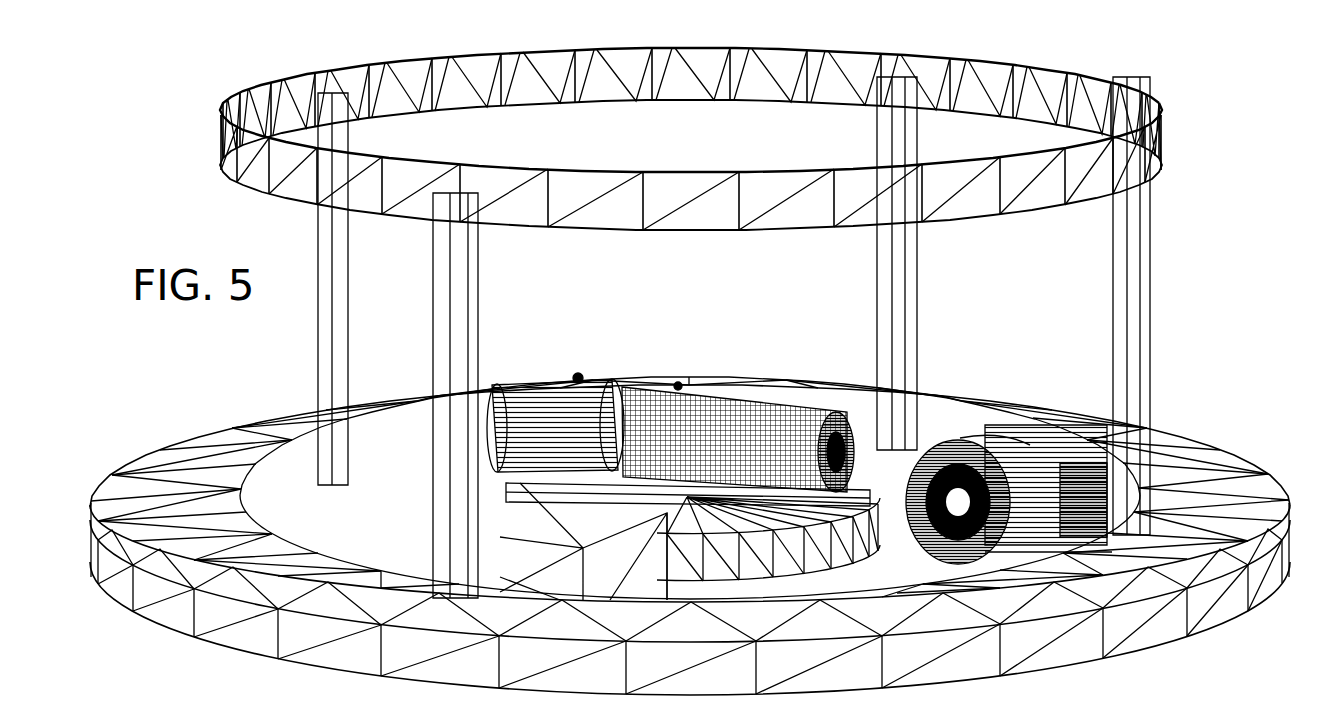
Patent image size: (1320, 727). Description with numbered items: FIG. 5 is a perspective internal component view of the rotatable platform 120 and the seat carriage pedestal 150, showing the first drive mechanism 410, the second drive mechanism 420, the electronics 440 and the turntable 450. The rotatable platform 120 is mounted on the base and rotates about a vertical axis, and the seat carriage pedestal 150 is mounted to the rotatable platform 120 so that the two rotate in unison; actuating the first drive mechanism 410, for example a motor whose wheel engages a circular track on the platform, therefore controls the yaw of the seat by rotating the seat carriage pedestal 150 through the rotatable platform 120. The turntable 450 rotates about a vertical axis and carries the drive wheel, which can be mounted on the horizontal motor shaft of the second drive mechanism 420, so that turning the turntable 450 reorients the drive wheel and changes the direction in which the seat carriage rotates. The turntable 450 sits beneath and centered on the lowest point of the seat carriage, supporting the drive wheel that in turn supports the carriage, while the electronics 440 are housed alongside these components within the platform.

The seat carriage pedestal 150 is at (1142, 82).
The rotatable platform 120 is at (1172, 424).
The second drive mechanism 420 is at (618, 360).
The first drive mechanism 410 is at (935, 552).
The electronics 440 is at (500, 497).
The turntable 450 is at (776, 572).